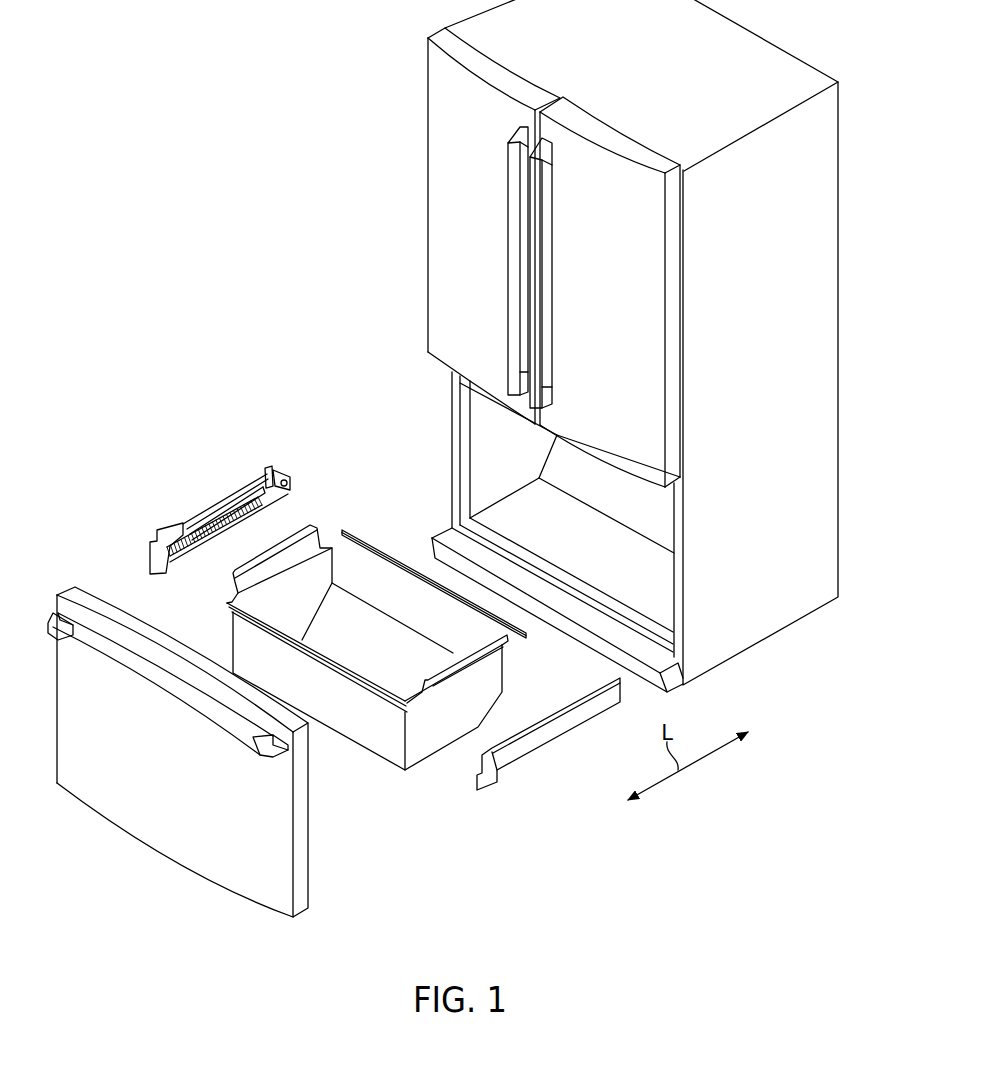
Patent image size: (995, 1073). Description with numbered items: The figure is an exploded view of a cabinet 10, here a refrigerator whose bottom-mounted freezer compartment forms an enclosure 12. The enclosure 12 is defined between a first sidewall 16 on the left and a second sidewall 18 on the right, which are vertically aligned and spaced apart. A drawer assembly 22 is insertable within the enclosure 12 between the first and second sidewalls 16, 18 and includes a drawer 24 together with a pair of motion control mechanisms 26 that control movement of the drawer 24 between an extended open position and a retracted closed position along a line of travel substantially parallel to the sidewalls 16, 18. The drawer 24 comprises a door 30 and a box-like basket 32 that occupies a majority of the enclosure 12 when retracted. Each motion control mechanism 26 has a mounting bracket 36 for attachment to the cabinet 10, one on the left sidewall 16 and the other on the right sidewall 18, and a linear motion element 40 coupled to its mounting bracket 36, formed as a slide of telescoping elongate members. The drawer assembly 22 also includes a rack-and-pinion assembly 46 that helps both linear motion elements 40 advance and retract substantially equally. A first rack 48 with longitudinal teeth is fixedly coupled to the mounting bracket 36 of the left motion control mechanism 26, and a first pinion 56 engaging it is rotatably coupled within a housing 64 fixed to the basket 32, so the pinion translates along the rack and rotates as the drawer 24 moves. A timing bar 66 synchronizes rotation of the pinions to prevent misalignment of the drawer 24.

The cabinet 10 is at (368, 170).
The enclosure 12 is at (657, 530).
The first sidewall 16 is at (450, 448).
The second sidewall 18 is at (838, 498).
The drawer assembly 22 is at (363, 957).
The drawer 24 is at (236, 968).
The motion control mechanism 26 is at (228, 482).
The door 30 is at (263, 893).
The basket 32 is at (380, 767).
The mounting bracket 36 is at (166, 528).
The linear motion element 40 is at (208, 512).
The rack-and-pinion assembly 46 is at (275, 447).
The first rack 48 is at (172, 558).
The first pinion 56 is at (293, 487).
The housing 64 is at (287, 470).
The timing bar 66 is at (360, 527).